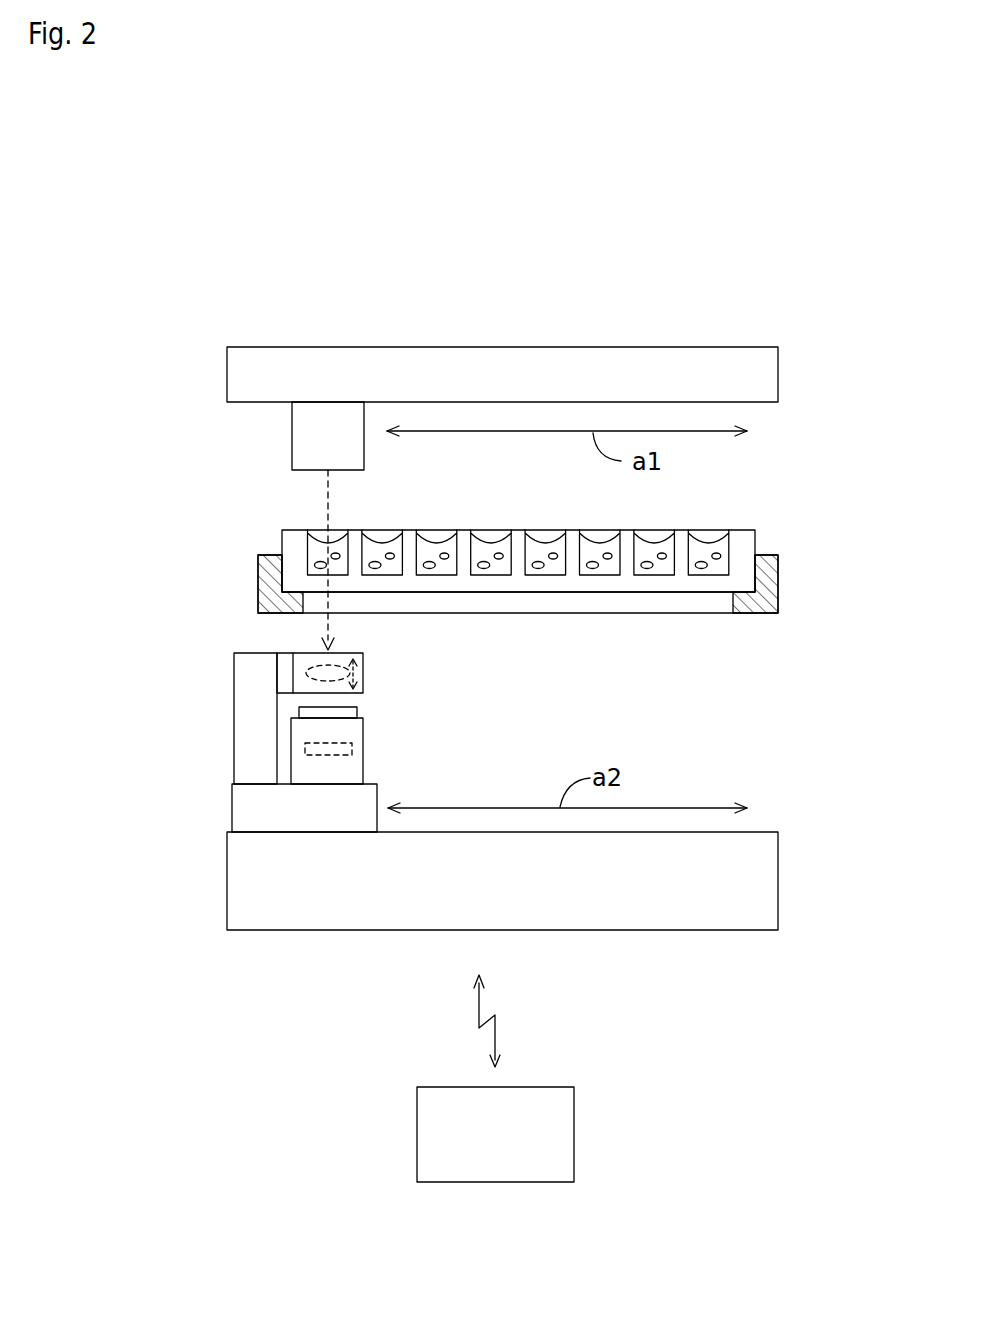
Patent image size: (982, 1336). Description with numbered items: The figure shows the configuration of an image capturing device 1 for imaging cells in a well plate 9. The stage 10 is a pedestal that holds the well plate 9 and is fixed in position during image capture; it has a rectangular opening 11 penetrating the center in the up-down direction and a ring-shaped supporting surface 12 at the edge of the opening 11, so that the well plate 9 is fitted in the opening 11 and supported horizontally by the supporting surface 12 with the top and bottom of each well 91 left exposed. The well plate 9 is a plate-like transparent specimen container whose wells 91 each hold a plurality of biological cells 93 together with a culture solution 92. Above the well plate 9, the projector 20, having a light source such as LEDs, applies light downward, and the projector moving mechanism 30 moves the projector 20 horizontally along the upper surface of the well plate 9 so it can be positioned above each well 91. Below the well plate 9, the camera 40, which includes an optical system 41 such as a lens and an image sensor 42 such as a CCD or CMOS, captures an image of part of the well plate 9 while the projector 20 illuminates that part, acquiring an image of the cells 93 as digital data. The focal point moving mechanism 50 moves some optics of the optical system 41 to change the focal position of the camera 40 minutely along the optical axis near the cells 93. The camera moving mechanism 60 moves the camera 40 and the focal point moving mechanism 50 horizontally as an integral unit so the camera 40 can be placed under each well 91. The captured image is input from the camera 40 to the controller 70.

The image capturing device 1 is at (409, 299).
The projector moving mechanism 30 is at (626, 366).
The projector 20 is at (311, 432).
The stage 10 is at (547, 585).
The opening 11 is at (659, 605).
The supporting surface 12 is at (296, 588).
The well plate 9 is at (518, 559).
The well 91 is at (438, 533).
The culture solution 92 is at (500, 568).
The biological cell 93 is at (446, 561).
The focal point moving mechanism 50 is at (300, 672).
The camera 40 is at (387, 718).
The optical system 41 is at (366, 673).
The image sensor 42 is at (366, 748).
The camera moving mechanism 60 is at (251, 883).
The controller 70 is at (417, 1133).